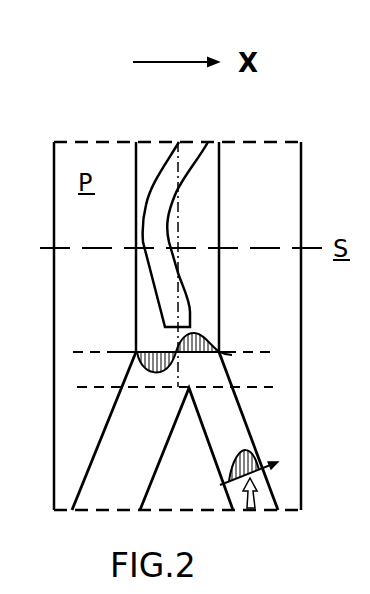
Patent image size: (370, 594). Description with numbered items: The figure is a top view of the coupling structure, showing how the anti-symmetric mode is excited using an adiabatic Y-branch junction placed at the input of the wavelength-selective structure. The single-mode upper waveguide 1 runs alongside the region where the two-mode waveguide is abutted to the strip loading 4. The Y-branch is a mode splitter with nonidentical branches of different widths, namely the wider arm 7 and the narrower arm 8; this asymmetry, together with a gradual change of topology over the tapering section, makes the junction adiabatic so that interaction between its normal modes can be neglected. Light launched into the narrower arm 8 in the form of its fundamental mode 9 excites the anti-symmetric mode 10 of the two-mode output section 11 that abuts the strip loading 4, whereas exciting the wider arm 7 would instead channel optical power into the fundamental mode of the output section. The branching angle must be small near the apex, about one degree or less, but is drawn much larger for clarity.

The upper waveguide 1 is at (188, 152).
The strip loading 4 is at (154, 152).
The wider arm 7 is at (112, 470).
The narrower arm 8 is at (232, 429).
The fundamental mode 9 is at (216, 485).
The anti-symmetric mode 10 is at (234, 349).
The two-mode output section 11 is at (134, 371).